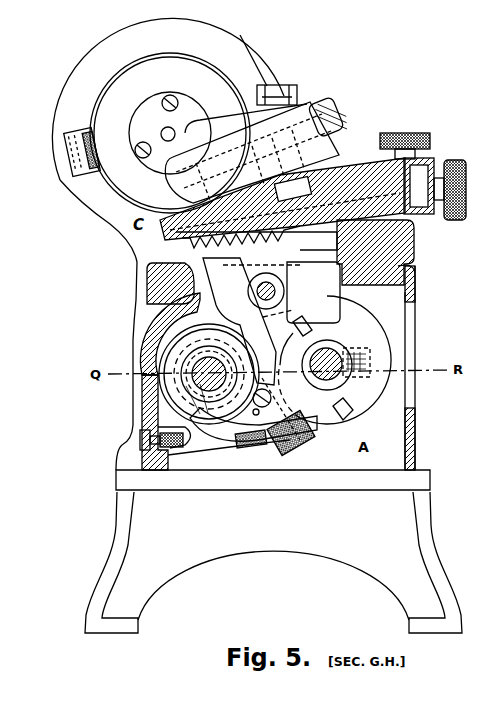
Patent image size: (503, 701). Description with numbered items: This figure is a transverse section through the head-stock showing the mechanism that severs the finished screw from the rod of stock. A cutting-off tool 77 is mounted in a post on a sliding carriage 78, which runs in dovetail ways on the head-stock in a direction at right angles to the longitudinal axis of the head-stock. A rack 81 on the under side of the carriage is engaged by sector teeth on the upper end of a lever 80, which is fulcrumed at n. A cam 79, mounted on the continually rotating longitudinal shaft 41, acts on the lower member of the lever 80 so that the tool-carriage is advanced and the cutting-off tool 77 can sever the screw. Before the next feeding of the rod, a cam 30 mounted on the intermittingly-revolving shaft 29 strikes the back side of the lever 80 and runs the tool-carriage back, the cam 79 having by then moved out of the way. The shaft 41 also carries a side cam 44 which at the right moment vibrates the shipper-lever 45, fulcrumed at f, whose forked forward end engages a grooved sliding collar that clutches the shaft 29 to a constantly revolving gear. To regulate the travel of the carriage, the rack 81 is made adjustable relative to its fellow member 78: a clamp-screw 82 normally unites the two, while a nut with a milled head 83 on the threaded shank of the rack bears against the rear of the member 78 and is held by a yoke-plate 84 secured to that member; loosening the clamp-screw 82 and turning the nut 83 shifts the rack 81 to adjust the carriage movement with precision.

The intermittingly-revolving shaft 29 is at (343, 352).
The cam 30 is at (334, 360).
The longitudinal shaft 41 is at (144, 403).
The side cam 44 is at (251, 416).
The shipper-lever 45 is at (288, 416).
The cutting-off tool 77 is at (257, 119).
The sliding carriage 78 is at (350, 170).
The cam 79 is at (228, 333).
The lever 80 is at (271, 321).
The rack 81 is at (256, 238).
The clamp-screw 82 is at (405, 136).
The milled-head nut 83 is at (462, 208).
The yoke-plate 84 is at (432, 170).